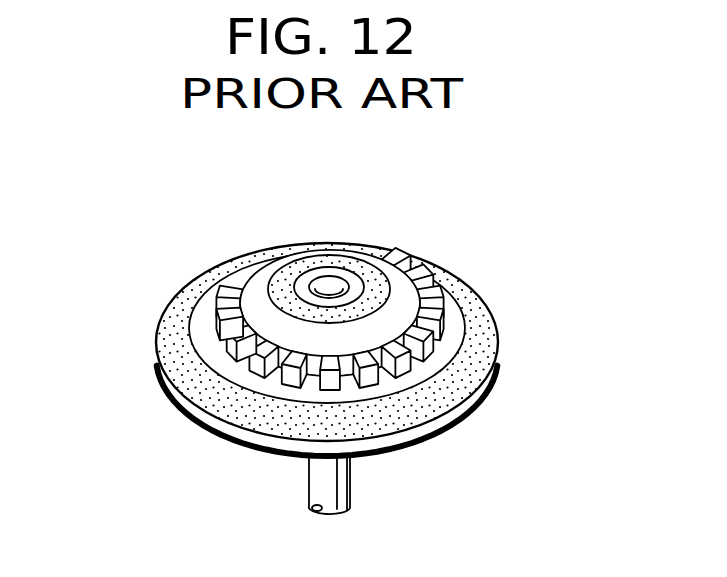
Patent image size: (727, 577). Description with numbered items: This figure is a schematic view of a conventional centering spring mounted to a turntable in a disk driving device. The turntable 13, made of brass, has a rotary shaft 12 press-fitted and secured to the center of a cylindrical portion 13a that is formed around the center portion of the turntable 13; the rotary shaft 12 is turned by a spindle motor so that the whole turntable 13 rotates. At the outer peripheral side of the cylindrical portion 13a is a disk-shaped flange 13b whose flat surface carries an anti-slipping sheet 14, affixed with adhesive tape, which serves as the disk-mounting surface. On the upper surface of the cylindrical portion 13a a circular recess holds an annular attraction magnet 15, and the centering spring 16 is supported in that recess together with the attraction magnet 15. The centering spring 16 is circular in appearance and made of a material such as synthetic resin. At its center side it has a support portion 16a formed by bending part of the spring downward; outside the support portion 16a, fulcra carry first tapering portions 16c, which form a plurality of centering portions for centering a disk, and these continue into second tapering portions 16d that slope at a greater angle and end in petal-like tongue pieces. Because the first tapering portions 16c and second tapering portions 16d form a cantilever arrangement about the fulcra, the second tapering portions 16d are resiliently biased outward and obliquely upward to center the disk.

The rotary shaft 12 is at (311, 285).
The turntable 13 is at (178, 410).
The cylindrical portion 13a is at (300, 268).
The disk-shaped flange 13b is at (484, 396).
The anti-slipping sheet 14 is at (497, 326).
The attraction magnet 15 is at (343, 258).
The centering spring 16 is at (389, 366).
The support portion 16a is at (440, 352).
The first tapering portions 16c is at (377, 388).
The second tapering portions 16d is at (444, 365).